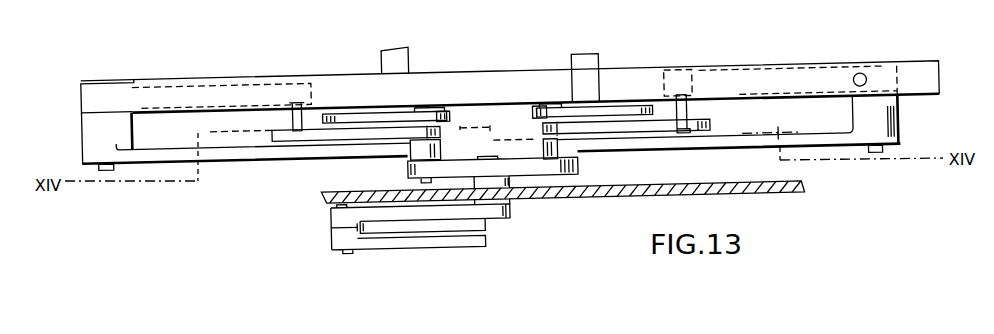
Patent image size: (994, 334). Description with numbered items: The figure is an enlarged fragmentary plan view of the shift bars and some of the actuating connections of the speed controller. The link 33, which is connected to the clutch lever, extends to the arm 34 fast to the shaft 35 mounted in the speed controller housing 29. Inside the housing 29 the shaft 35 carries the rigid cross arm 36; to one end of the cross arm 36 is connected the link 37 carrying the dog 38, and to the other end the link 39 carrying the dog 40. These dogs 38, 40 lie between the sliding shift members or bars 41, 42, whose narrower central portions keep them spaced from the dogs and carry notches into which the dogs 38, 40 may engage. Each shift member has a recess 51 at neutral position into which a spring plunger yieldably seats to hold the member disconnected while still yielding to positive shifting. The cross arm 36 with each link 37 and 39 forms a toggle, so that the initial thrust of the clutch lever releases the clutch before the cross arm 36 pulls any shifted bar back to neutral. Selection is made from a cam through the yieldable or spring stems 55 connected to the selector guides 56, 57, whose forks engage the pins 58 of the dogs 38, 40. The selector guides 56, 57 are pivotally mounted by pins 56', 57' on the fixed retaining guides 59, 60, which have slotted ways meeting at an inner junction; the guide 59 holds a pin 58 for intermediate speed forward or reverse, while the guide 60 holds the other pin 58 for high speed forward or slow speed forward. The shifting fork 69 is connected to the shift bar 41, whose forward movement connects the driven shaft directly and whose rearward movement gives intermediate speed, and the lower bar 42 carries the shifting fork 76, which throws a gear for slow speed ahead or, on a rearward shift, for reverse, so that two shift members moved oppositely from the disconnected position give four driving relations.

The speed controller housing 29 is at (321, 196).
The link 33 is at (414, 245).
The arm 34 is at (445, 220).
The shaft 35 is at (495, 221).
The cross arm 36 is at (542, 175).
The link 37 is at (238, 154).
The dog 38 is at (129, 76).
The link 39 is at (730, 154).
The dog 40 is at (703, 71).
The shift bar 41 is at (249, 71).
The shift bar 42 is at (102, 71).
The recess 51 is at (863, 82).
The spring stem 55 is at (533, 106).
The selector guide 56 is at (393, 77).
The pin 56' is at (442, 95).
The selector guide 57 is at (594, 72).
The pin 57' is at (556, 91).
The pin 58 is at (302, 115).
The fixed retaining guide 59 is at (318, 141).
The fixed retaining guide 60 is at (658, 136).
The shifting fork 69 is at (575, 56).
The shifting fork 76 is at (412, 47).